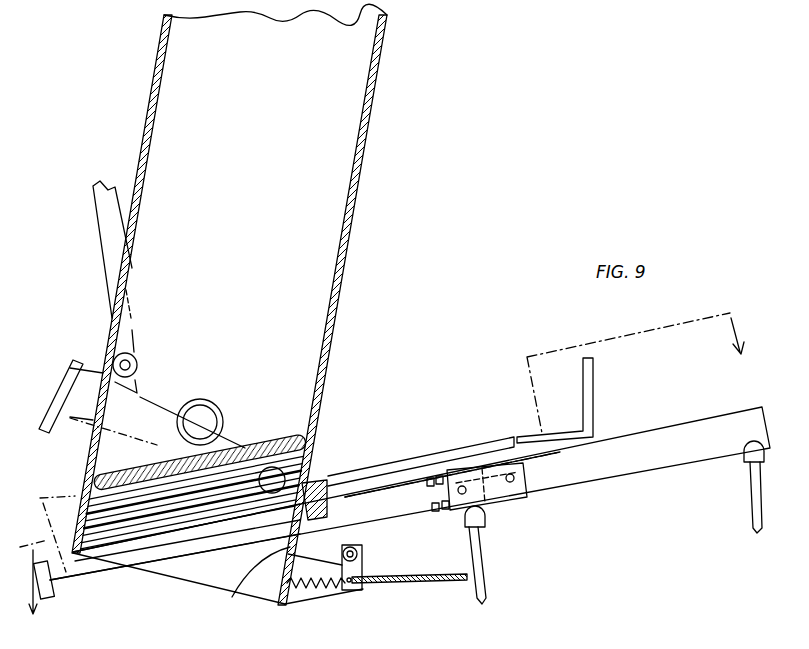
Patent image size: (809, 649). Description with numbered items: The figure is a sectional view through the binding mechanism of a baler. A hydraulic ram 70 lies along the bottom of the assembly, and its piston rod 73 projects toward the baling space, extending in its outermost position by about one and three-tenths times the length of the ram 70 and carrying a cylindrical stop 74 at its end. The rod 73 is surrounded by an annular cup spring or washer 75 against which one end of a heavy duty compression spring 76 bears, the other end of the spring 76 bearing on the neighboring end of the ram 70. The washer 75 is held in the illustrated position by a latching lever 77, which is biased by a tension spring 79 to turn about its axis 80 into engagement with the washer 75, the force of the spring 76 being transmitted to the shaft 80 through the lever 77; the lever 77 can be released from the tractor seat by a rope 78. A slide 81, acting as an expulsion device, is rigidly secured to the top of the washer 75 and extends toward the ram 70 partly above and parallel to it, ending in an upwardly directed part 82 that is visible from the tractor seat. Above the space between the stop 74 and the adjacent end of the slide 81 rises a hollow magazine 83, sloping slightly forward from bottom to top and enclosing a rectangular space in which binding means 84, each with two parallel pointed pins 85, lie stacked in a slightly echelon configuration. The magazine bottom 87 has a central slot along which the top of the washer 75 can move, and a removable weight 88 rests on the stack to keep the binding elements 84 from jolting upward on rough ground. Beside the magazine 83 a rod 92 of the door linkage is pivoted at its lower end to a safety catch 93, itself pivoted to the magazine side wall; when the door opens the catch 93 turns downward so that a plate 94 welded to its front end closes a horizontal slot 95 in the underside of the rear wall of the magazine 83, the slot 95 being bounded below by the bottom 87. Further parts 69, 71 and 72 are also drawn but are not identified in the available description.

The hopper 69 is at (350, 250).
The hydraulic ram 70 is at (625, 478).
The support rod 71 is at (492, 578).
The support rod 72 is at (750, 522).
The piston rod 73 is at (108, 575).
The cylindrical stop 74 is at (57, 597).
The annular cup spring or washer 75 is at (327, 485).
The heavy duty compression spring 76 is at (440, 470).
The latching lever 77 is at (283, 568).
The rope 78 is at (447, 584).
The tension spring 79 is at (322, 592).
The axis (shaft) 80 is at (362, 553).
The slide 81 is at (392, 465).
The upwardly directed part 82 is at (593, 384).
The magazine 83 is at (150, 100).
The binding means (binding elements) 84 is at (276, 444).
The pins 85 is at (123, 478).
The bottom of the magazine 87 is at (207, 520).
The removable weight 88 is at (204, 398).
The rod 92 is at (104, 186).
The safety catch 93 is at (150, 405).
The plate 94 is at (78, 356).
The slot 95 is at (72, 545).